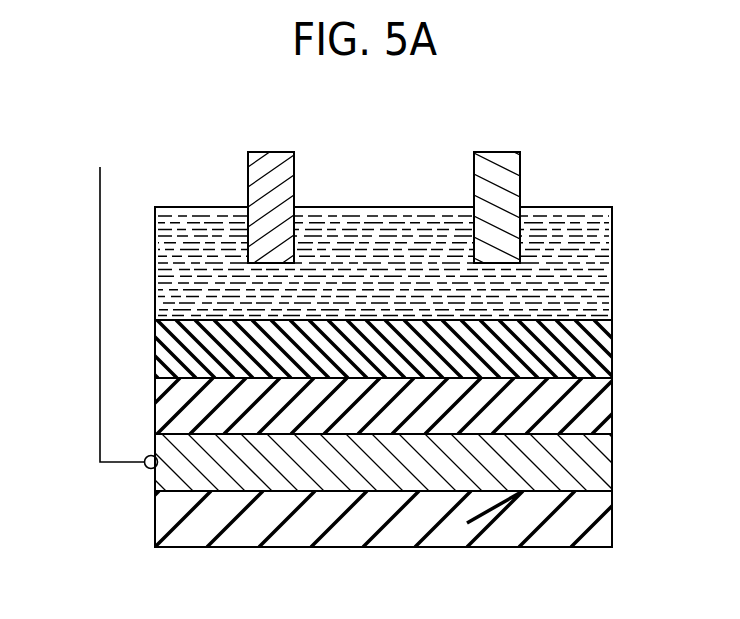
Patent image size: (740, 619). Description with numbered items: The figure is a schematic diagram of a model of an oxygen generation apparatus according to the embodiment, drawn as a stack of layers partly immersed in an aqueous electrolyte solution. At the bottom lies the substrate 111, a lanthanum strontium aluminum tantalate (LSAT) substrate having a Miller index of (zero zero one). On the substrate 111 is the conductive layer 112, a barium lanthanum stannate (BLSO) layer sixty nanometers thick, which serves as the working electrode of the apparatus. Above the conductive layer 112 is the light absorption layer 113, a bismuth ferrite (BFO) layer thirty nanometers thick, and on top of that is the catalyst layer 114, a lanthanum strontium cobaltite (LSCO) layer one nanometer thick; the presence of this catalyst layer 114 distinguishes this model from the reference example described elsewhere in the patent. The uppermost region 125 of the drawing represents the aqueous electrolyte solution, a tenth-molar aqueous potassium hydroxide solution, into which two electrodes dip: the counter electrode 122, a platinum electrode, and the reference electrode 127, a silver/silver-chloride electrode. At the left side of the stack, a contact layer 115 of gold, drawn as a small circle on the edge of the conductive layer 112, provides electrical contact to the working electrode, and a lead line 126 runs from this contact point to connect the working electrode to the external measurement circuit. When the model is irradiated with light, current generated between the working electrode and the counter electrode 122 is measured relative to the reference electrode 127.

The encapsulation layer 125 is at (597, 268).
The reference electrode 127 is at (272, 163).
The counter electrode 122 is at (498, 163).
The catalyst layer 114 is at (597, 346).
The light absorption layer 113 is at (597, 403).
The conductive layer 112 is at (597, 459).
The substrate 111 is at (597, 516).
The lead line 126 is at (99, 248).
The contact layer 115 is at (147, 469).